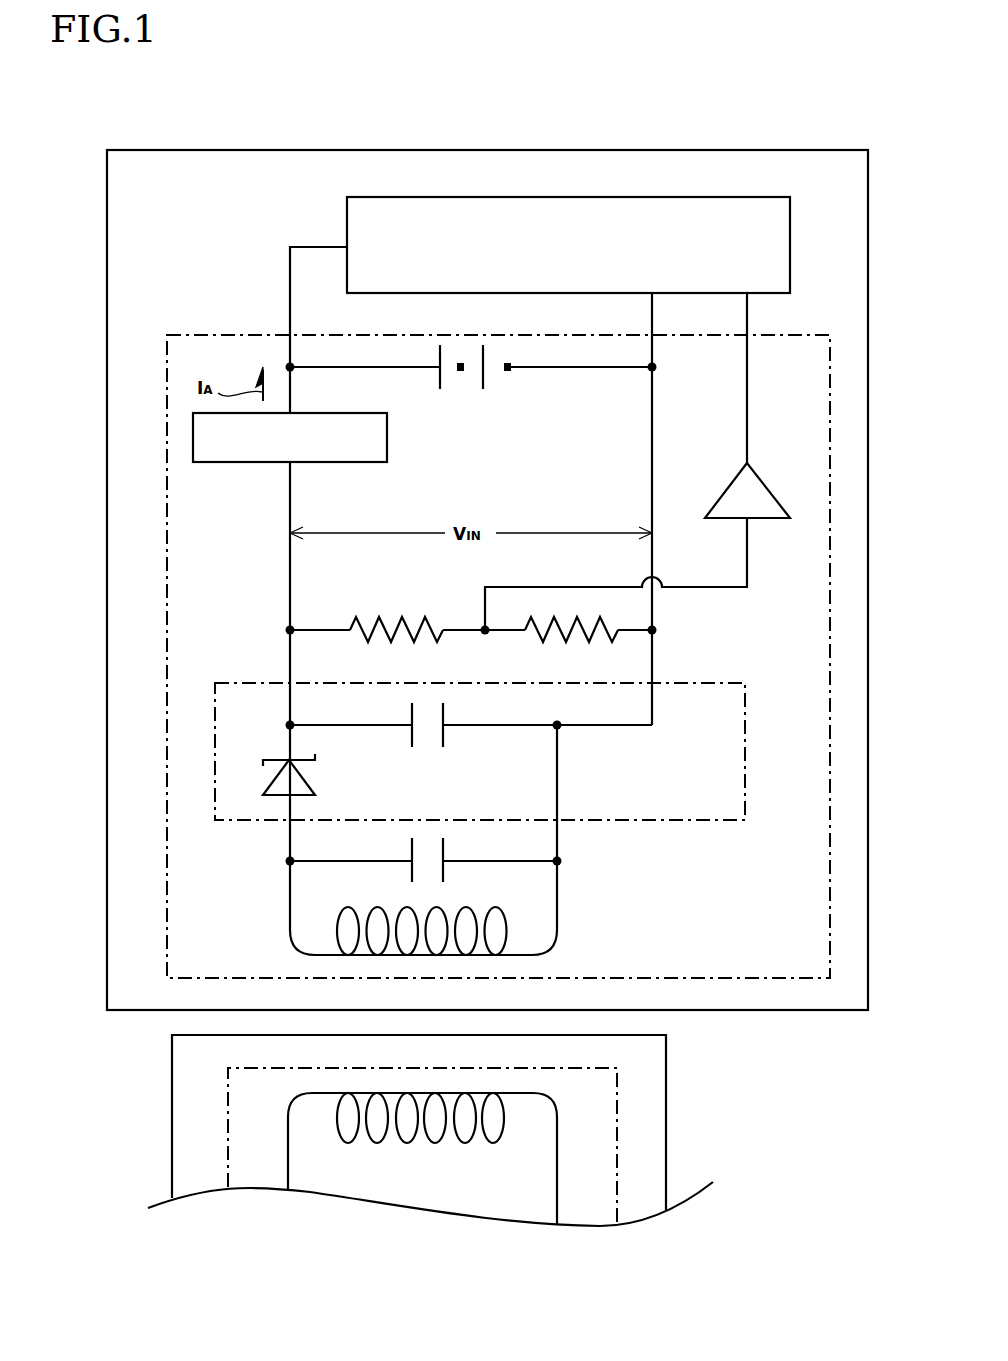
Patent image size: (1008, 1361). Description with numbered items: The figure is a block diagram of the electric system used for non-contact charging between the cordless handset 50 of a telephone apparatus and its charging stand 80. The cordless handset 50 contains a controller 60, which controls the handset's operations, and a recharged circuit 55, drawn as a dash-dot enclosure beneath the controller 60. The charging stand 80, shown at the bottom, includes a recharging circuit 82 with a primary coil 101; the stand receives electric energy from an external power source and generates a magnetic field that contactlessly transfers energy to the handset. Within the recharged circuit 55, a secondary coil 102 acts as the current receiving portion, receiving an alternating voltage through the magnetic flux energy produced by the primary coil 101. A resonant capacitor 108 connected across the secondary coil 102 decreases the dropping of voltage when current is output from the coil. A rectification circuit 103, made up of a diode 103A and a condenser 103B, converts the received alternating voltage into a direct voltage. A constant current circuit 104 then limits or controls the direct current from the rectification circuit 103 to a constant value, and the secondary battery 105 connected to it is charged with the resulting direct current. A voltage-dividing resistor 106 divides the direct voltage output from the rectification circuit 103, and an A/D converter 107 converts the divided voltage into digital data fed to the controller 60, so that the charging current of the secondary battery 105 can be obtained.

The cordless handset 50 is at (107, 250).
The recharged circuit 55 is at (167, 478).
The controller 60 is at (790, 247).
The charging stand 80 is at (666, 1125).
The recharging circuit 82 is at (617, 1087).
The primary coil 101 is at (465, 1143).
The secondary coil 102 is at (557, 925).
The rectification circuit 103 is at (215, 700).
The diode 103A is at (312, 776).
The condenser 103B is at (443, 740).
The constant current circuit 104 is at (387, 448).
The secondary battery 105 is at (483, 388).
The voltage-dividing resistor 106 is at (471, 610).
The A/D converter 107 is at (786, 470).
The resonant capacitor 108 is at (443, 840).